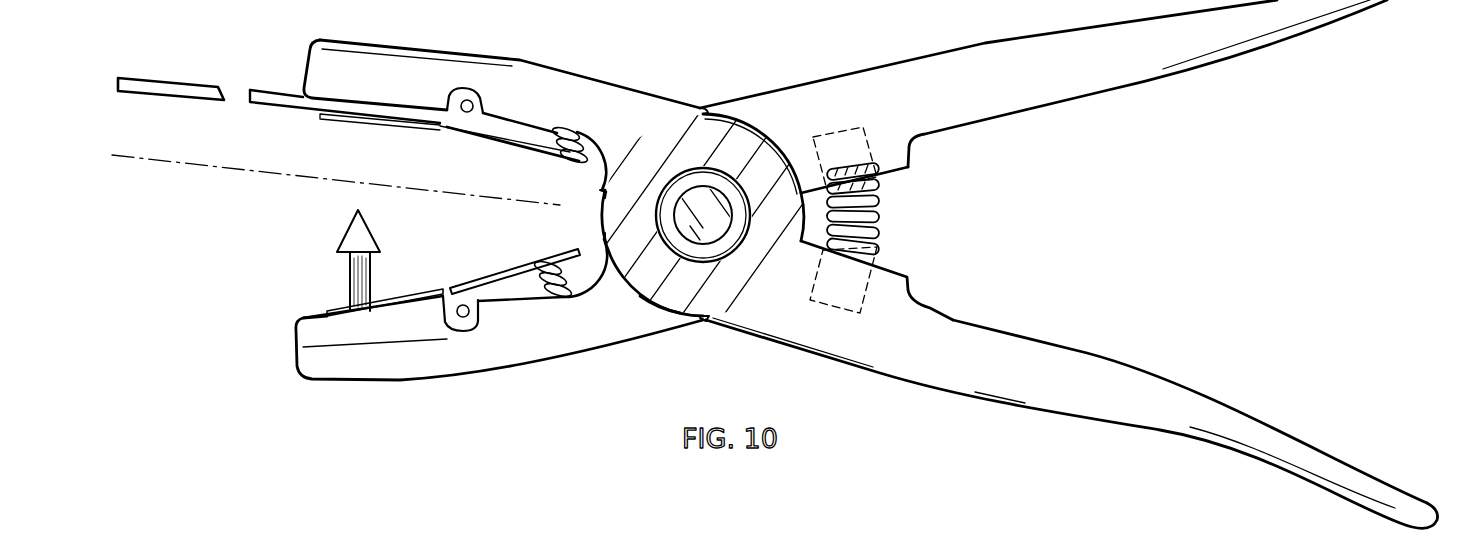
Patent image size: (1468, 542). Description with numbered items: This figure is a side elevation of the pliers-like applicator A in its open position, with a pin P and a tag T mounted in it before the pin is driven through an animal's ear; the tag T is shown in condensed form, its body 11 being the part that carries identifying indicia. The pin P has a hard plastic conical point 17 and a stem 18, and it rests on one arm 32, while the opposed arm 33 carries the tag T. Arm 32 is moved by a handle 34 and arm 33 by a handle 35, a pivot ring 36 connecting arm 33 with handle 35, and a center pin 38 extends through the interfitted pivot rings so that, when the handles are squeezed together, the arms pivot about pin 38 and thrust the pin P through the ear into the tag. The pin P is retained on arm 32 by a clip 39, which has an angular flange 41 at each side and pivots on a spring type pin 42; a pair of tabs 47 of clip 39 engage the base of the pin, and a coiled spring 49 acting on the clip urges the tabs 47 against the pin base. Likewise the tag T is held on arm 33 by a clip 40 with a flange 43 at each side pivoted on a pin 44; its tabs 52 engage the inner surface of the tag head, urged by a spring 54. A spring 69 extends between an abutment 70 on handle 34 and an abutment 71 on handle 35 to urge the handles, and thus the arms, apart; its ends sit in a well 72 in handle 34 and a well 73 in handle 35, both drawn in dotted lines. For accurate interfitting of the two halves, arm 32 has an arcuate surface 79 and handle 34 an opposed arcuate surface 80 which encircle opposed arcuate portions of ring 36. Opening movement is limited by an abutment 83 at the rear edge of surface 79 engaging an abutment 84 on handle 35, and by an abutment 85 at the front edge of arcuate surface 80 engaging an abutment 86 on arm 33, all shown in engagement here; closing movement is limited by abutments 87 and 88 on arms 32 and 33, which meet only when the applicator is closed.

The body 11 is at (252, 89).
The tag T is at (270, 108).
The conical point 17 is at (346, 238).
The stem 18 is at (155, 163).
The pin P is at (338, 274).
The arm 32 is at (600, 352).
The arm 33 is at (495, 57).
The handle 34 is at (1177, 80).
The handle 35 is at (1087, 354).
The pivot ring 36 is at (728, 156).
The pin 38 is at (700, 238).
The clip 39 is at (499, 278).
The clip 40 is at (513, 148).
The angular flange 41 is at (453, 326).
The pin 42 is at (470, 328).
The flange 43 is at (461, 101).
The pin 44 is at (460, 107).
The tabs 47 is at (336, 313).
The coiled spring 49 is at (572, 303).
The tabs 52 is at (338, 116).
The spring 54 is at (583, 141).
The spring 69 is at (881, 207).
The abutment 70 is at (907, 171).
The abutment 71 is at (890, 274).
The well 72 is at (870, 284).
The well 73 is at (863, 127).
The arcuate surface 79 is at (660, 311).
The arcuate surface 80 is at (758, 130).
The abutment 83 is at (698, 323).
The abutment 84 is at (707, 316).
The abutment 85 is at (710, 113).
The abutment 86 is at (698, 109).
The abutment 87 is at (602, 239).
The abutment 88 is at (602, 191).
The applicator A is at (988, 38).